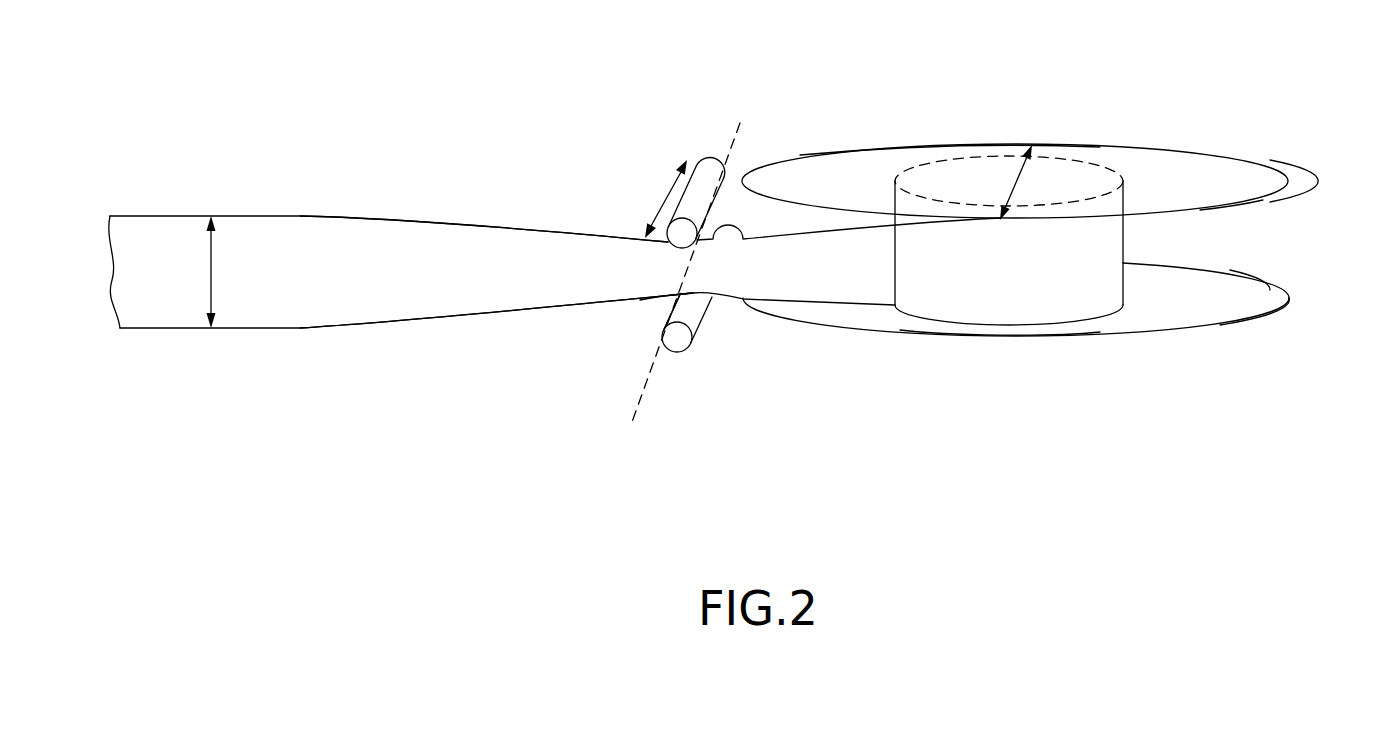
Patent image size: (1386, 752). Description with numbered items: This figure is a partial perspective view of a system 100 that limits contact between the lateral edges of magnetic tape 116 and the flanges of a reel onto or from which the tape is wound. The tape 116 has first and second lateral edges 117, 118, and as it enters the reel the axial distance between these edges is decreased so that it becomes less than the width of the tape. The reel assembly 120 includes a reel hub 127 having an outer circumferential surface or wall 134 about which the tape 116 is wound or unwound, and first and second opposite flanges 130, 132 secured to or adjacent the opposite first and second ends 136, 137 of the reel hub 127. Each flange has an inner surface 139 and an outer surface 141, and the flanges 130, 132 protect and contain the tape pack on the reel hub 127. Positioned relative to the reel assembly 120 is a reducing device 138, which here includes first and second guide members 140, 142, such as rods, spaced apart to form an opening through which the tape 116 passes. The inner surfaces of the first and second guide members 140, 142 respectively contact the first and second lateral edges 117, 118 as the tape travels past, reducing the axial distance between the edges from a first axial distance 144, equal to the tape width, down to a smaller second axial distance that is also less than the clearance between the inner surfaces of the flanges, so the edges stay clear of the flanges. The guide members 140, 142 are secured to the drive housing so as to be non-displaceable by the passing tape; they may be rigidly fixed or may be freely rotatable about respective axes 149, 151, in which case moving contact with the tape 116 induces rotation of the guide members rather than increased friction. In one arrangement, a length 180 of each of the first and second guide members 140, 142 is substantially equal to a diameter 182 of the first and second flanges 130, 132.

The system 100 is at (278, 407).
The tape 116 is at (367, 238).
The first lateral edge 117 is at (490, 227).
The second lateral edge 118 is at (437, 322).
The reel assembly 120 is at (1066, 130).
The reel hub 127 is at (1110, 287).
The first flange 130 is at (1213, 172).
The second flange 132 is at (1202, 297).
The outer circumferential surface 134 is at (1124, 250).
The first end 136 is at (983, 167).
The second end 137 is at (1053, 328).
The reducing device 138 is at (684, 367).
The inner surface 139 is at (1263, 198).
The first guide member 140 is at (724, 177).
The outer surface 141 is at (1268, 177).
The second guide member 142 is at (675, 300).
The first axial distance 144 is at (208, 267).
The axis 149 is at (643, 310).
The axis 151 is at (638, 405).
The length 180 is at (657, 200).
The diameter 182 is at (1015, 183).